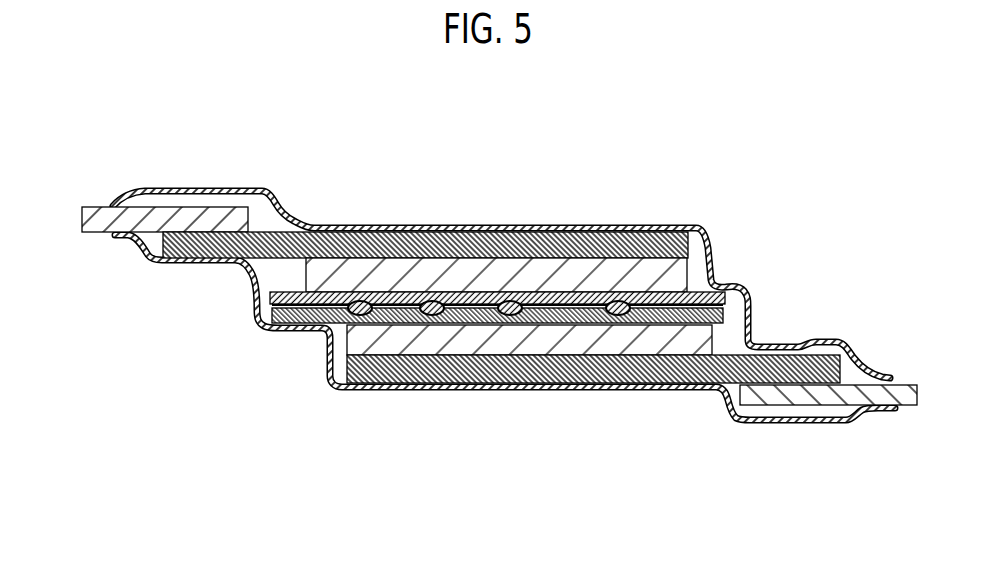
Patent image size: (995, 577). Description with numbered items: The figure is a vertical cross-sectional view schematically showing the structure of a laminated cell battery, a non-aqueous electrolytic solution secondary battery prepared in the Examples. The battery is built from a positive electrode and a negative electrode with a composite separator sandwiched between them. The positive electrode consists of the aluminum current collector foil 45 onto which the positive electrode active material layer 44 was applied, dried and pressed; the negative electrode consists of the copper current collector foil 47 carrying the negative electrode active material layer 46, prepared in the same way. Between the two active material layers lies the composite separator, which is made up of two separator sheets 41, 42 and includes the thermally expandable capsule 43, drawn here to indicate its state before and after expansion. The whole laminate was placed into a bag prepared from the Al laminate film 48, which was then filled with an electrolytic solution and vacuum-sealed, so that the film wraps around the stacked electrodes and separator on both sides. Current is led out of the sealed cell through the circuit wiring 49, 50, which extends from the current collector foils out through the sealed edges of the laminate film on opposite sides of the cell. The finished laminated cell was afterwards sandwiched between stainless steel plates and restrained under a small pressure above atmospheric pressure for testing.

The separator sheet 41 is at (738, 295).
The separator sheet 42 is at (256, 313).
The thermally expandable capsule 43 is at (360, 293).
The positive electrode active material layer 44 is at (678, 268).
The aluminum current collector foil 45 is at (690, 242).
The negative electrode active material layer 46 is at (341, 340).
The copper current collector foil 47 is at (343, 369).
The Al laminate film 48 is at (268, 189).
The circuit wiring 49 is at (212, 215).
The circuit wiring 50 is at (837, 394).